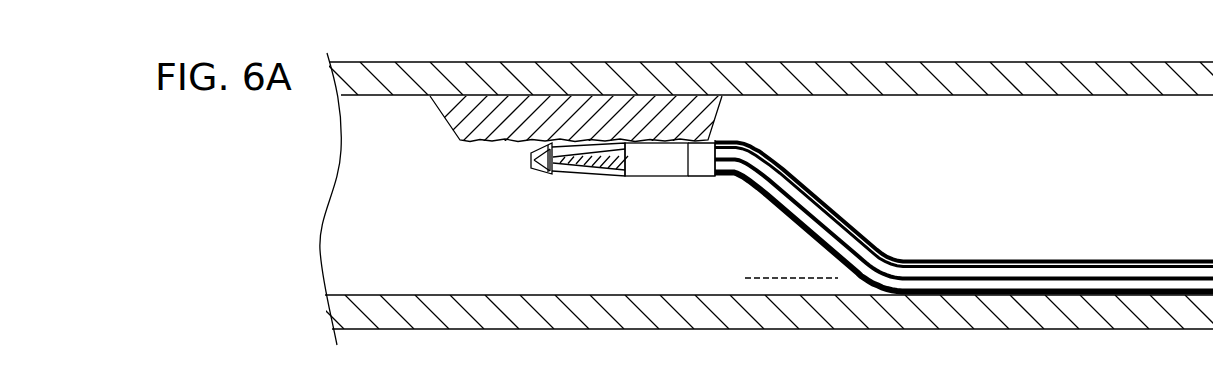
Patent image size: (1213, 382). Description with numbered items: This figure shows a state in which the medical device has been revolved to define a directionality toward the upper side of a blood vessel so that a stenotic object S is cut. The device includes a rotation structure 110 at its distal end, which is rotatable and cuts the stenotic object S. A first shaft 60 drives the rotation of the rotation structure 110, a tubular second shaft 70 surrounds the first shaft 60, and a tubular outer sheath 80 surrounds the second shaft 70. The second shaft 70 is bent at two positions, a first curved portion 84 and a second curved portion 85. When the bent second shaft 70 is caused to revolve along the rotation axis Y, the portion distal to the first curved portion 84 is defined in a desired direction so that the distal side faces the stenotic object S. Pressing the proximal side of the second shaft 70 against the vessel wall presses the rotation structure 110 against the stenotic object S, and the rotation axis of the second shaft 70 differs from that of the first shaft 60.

The stenotic object S is at (578, 114).
The rotation structure 110 is at (576, 186).
The second curved portion 85 is at (788, 141).
The first curved portion 84 is at (890, 242).
The outer sheath 80 is at (1056, 260).
The second shaft 70 is at (1127, 262).
The first shaft 60 is at (1178, 276).
The rotation axis Y is at (775, 278).